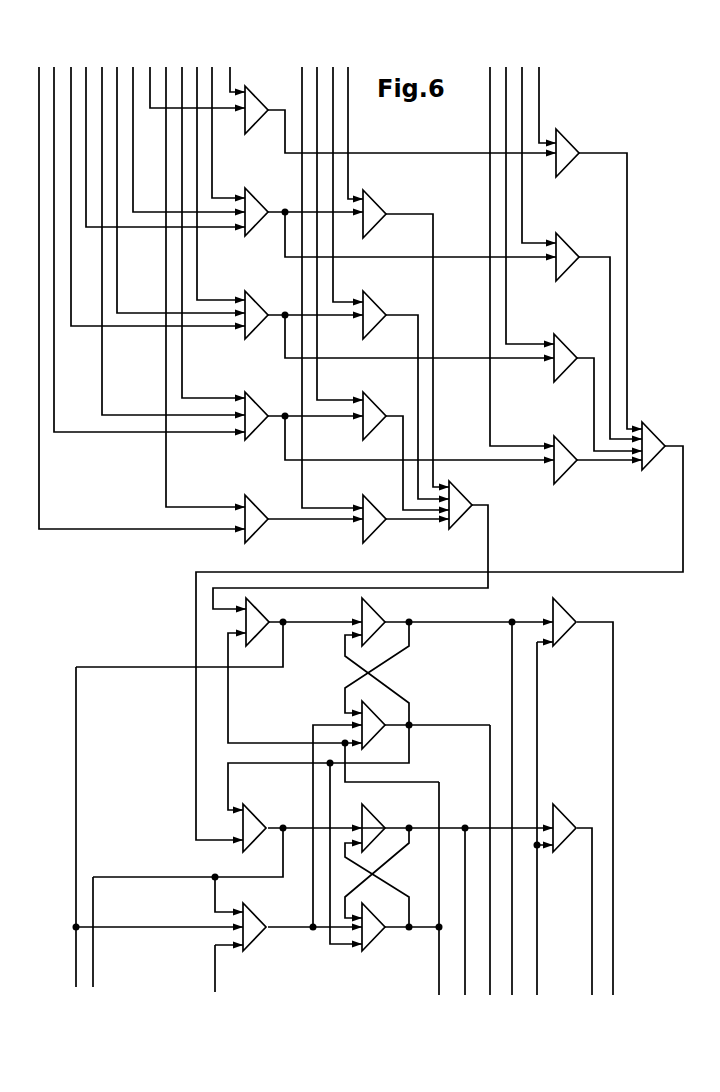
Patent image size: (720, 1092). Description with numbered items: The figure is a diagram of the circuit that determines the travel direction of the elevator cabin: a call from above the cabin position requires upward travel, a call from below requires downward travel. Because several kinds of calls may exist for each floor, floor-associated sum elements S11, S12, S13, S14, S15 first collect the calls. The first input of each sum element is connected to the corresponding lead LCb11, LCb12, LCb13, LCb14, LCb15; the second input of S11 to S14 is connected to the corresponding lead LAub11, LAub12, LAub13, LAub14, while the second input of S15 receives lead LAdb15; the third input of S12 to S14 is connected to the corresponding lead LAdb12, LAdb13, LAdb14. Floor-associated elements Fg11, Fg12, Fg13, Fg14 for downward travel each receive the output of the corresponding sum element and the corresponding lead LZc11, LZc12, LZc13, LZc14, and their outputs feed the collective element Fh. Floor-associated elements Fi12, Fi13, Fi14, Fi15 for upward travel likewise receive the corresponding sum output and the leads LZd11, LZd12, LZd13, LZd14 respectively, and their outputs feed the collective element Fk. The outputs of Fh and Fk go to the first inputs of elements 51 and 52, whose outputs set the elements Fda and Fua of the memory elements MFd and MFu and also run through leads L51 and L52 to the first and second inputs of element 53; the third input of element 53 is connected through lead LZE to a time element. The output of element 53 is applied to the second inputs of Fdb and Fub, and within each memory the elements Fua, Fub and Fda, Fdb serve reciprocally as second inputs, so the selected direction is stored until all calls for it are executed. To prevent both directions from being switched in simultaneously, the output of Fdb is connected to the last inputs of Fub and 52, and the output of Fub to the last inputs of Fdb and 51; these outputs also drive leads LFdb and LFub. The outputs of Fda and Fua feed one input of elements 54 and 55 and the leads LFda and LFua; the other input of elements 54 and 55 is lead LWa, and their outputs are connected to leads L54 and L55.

The floor-associated sum element S11 is at (262, 508).
The floor-associated sum element S12 is at (262, 405).
The floor-associated sum element S13 is at (262, 304).
The floor-associated sum element S14 is at (262, 201).
The floor-associated sum element S15 is at (262, 99).
The floor-associated element for downward travel Fg11 is at (389, 496).
The floor-associated element for downward travel Fg12 is at (381, 405).
The floor-associated element for downward travel Fg13 is at (381, 304).
The floor-associated element for downward travel Fg14 is at (381, 203).
The collective element Fh is at (466, 499).
The floor-associated element for upward travel Fi12 is at (570, 452).
The floor-associated element for upward travel Fi13 is at (570, 350).
The floor-associated element for upward travel Fi14 is at (572, 249).
The floor-associated element for upward travel Fi15 is at (572, 145).
The collective element Fk is at (658, 439).
The element 51 is at (261, 814).
The element 52 is at (264, 617).
The element 53 is at (261, 921).
The element 54 is at (571, 819).
The element 55 is at (573, 620).
The element of memory element MFu Fua is at (380, 617).
The element of memory element MFu Fub is at (379, 733).
The memory element MFu is at (388, 673).
The element of memory element MFd Fda is at (378, 815).
The element of memory element MFd Fdb is at (383, 935).
The memory element MFd is at (387, 877).
The lead LAub11 is at (137, 269).
The lead LAub12 is at (145, 220).
The lead LAub13 is at (153, 167).
The lead LAub14 is at (161, 118).
The lead LAdb12 is at (169, 211).
The lead LAdb13 is at (176, 160).
The lead LAdb14 is at (184, 110).
The lead LAdb15 is at (193, 58).
The lead LCb11 is at (201, 263).
The lead LCb12 is at (209, 208).
The lead LCb13 is at (216, 159).
The lead LCb14 is at (224, 108).
The lead LCb15 is at (233, 55).
The lead LZc11 is at (328, 264).
The lead LZc12 is at (335, 210).
The lead LZc13 is at (343, 161).
The lead LZc14 is at (351, 109).
The lead LZd11 is at (517, 232).
The lead LZd12 is at (525, 181).
The lead LZd13 is at (534, 131).
The lead LZd14 is at (543, 81).
The lead L51 is at (93, 967).
The lead L52 is at (76, 862).
The lead L54 is at (589, 942).
The lead L55 is at (599, 839).
The lead LZE is at (215, 1001).
The lead LFdb is at (439, 919).
The lead LFda is at (465, 941).
The lead LFub is at (490, 891).
The lead LFua is at (512, 838).
The lead LWa is at (540, 847).